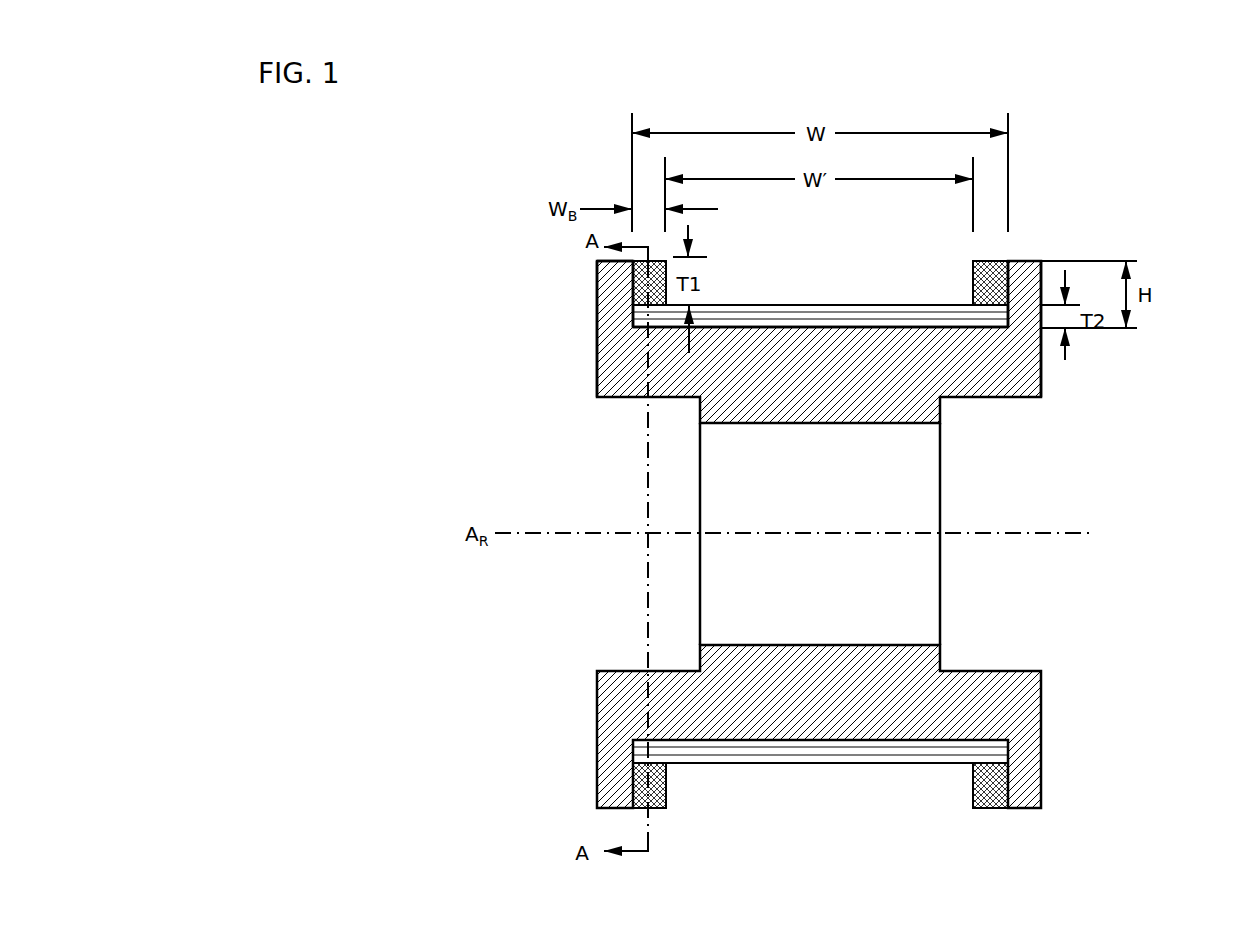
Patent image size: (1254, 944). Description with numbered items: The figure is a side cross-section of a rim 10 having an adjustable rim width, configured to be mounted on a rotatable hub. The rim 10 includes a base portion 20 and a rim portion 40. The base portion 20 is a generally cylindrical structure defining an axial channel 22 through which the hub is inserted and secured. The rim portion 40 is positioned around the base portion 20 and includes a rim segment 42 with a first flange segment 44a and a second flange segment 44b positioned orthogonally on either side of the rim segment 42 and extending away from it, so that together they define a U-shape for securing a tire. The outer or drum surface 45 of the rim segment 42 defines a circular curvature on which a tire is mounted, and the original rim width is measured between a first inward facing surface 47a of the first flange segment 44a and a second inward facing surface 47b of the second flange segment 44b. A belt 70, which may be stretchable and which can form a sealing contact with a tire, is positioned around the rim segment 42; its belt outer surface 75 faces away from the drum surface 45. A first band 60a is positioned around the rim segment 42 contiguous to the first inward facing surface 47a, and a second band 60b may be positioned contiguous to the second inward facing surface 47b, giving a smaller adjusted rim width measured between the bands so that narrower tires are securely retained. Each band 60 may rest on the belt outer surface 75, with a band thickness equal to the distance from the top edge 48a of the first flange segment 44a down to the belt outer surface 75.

The rim 10 is at (536, 128).
The base portion 20 is at (686, 411).
The axial channel 22 is at (717, 500).
The rim portion 40 is at (583, 362).
The rim segment 42 is at (657, 356).
The first flange segment 44a is at (607, 307).
The second flange segment 44b is at (1040, 262).
The drum surface 45 is at (795, 327).
The first inward facing surface 47a is at (630, 278).
The second inward facing surface 47b is at (1025, 275).
The top edge 48a is at (612, 259).
The band 60 is at (655, 798).
The first band 60a is at (650, 268).
The second band 60b is at (978, 272).
The belt 70 is at (851, 312).
The belt outer surface 75 is at (826, 306).